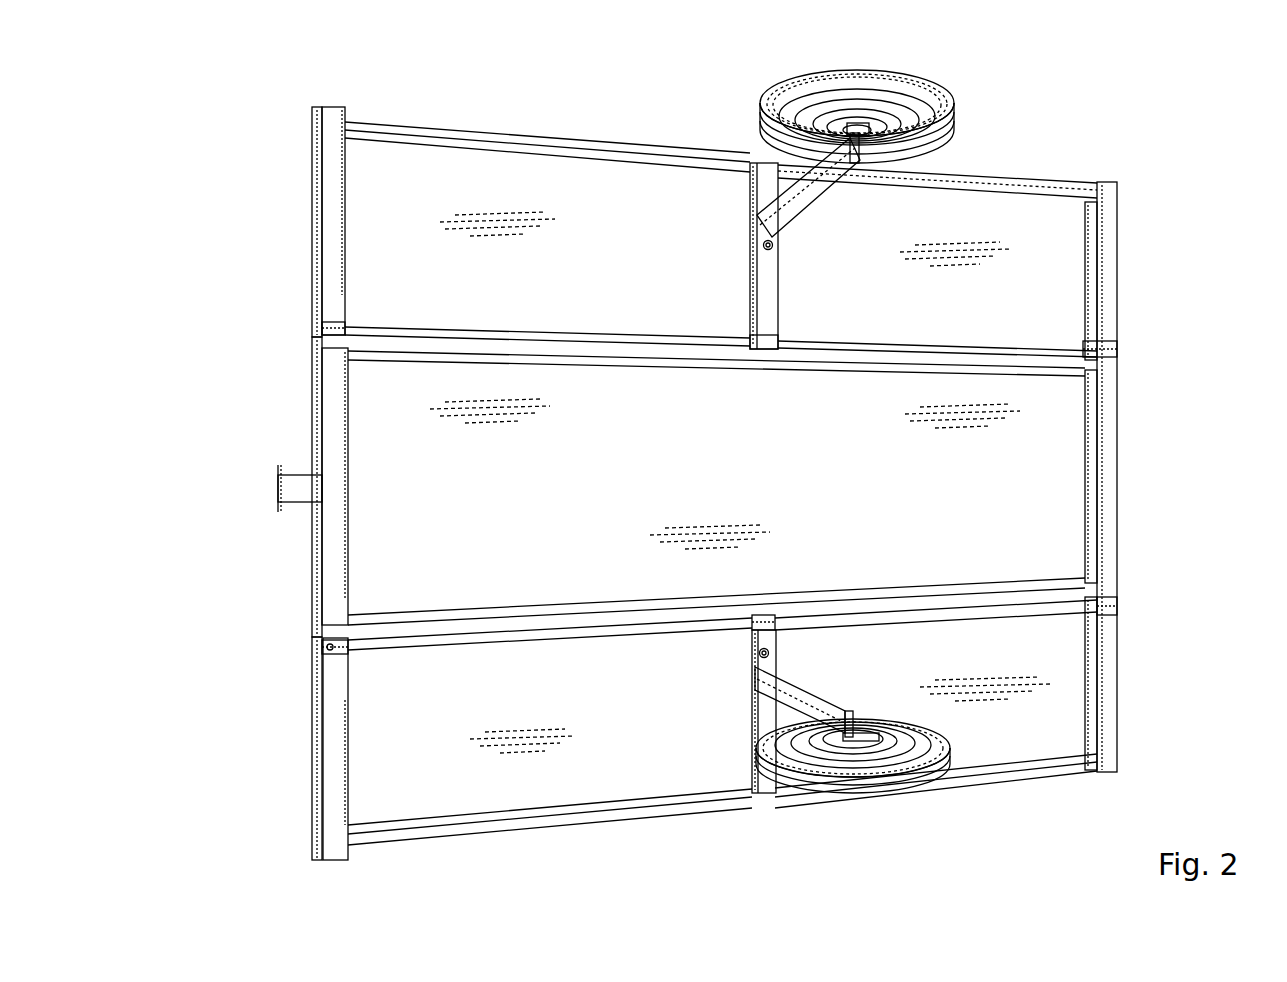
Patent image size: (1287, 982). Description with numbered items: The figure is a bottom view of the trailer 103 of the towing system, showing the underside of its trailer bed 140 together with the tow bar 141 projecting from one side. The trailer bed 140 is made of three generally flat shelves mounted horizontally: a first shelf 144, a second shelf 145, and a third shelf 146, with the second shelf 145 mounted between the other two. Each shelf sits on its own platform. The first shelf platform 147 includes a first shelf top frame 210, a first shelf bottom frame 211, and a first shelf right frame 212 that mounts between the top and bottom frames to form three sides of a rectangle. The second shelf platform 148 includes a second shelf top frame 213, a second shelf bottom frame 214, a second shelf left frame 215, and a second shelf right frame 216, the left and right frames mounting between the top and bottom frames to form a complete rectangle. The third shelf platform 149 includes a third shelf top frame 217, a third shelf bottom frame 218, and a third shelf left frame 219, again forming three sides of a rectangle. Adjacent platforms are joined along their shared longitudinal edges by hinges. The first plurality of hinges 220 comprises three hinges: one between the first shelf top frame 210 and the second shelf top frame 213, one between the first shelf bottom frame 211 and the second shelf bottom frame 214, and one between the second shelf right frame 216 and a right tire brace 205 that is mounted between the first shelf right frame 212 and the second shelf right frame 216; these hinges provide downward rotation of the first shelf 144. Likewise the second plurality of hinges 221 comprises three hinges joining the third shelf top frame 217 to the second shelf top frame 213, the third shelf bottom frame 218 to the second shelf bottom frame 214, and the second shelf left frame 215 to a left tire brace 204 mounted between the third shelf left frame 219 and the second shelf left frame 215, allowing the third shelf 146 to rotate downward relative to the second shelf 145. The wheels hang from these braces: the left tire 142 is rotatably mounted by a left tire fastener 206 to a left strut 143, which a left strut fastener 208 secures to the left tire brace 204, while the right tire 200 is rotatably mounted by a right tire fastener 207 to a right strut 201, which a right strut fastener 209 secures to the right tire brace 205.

The trailer 103 is at (310, 114).
The trailer bed 140 is at (1118, 205).
The tow bar 141 is at (296, 481).
The left tire 142 is at (790, 93).
The left strut 143 is at (800, 186).
The first shelf 144 is at (618, 698).
The second shelf 145 is at (748, 482).
The third shelf 146 is at (611, 274).
The first shelf platform 147 is at (312, 729).
The second shelf platform 148 is at (310, 518).
The third shelf platform 149 is at (311, 252).
The right tire 200 is at (893, 785).
The right strut 201 is at (781, 689).
The left tire brace 204 is at (766, 287).
The right tire brace 205 is at (760, 786).
The left tire fastener 206 is at (863, 150).
The right tire fastener 207 is at (870, 736).
The left strut fastener 208 is at (772, 245).
The right strut fastener 209 is at (768, 654).
The first shelf top frame 210 is at (318, 812).
The first shelf bottom frame 211 is at (1117, 751).
The first shelf right frame 212 is at (1052, 778).
The second shelf top frame 213 is at (318, 441).
The second shelf bottom frame 214 is at (1117, 443).
The second shelf left frame 215 is at (1040, 369).
The second shelf right frame 216 is at (395, 617).
The third shelf top frame 217 is at (316, 180).
The third shelf bottom frame 218 is at (1118, 298).
The third shelf left frame 219 is at (443, 130).
The first plurality of hinges 220 is at (348, 647).
The second plurality of hinges 221 is at (1103, 351).